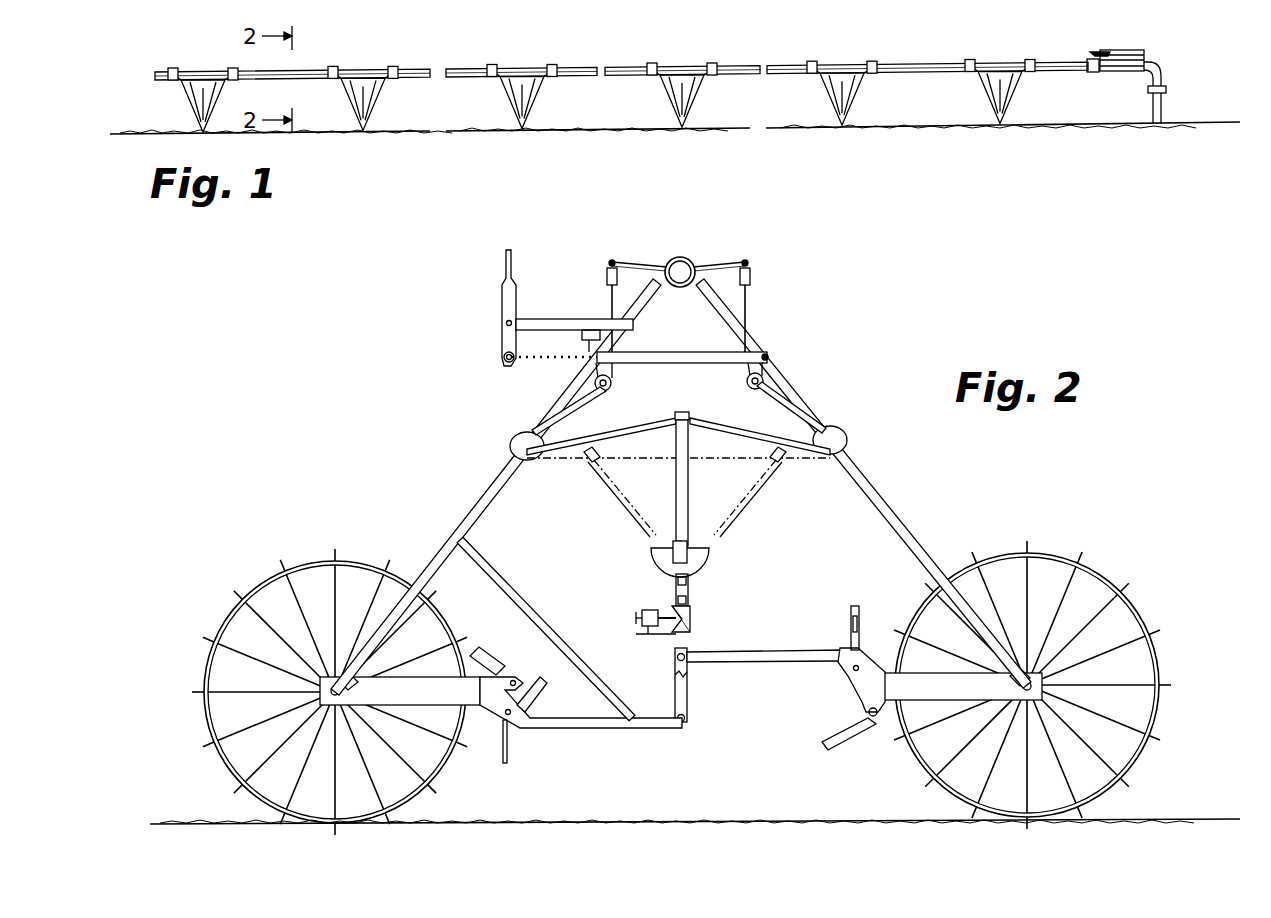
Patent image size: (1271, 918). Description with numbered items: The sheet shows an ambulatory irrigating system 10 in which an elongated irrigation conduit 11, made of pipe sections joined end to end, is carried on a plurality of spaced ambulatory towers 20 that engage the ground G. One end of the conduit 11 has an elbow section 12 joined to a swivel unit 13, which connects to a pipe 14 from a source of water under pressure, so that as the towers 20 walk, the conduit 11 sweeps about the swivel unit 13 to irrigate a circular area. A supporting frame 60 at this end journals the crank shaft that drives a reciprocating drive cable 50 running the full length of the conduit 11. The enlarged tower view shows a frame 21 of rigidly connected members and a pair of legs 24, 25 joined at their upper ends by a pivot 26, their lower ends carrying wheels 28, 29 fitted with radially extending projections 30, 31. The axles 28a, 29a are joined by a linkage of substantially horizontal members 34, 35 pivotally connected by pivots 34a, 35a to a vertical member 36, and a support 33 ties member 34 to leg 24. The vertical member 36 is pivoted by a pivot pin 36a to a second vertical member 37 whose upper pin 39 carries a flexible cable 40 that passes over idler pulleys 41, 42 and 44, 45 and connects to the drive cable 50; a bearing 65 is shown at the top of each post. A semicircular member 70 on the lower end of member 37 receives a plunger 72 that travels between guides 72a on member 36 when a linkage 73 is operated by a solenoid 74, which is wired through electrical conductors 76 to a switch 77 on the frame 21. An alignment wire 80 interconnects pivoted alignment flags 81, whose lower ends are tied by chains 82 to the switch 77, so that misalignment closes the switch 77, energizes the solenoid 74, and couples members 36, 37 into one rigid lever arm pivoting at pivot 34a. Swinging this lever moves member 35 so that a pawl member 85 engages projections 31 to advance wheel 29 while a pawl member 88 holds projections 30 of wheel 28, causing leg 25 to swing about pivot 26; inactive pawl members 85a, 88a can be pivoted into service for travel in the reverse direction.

In FIG. 1, the ambulatory irrigating system 10 is at (616, 50).
In FIG. 1, the elongated irrigation conduit 11 is at (745, 75).
In FIG. 2, the elongated irrigation conduit 11 is at (684, 258).
In FIG. 1, the elbow section 12 is at (1160, 78).
In FIG. 1, the swivel unit 13 is at (1164, 89).
In FIG. 1, the pipe 14 is at (1162, 115).
In FIG. 1, the ambulatory towers 20 is at (195, 98).
In FIG. 2, the ambulatory towers 20 is at (458, 424).
In FIG. 2, the frame 21 is at (688, 354).
In FIG. 2, the leg 24 is at (480, 500).
In FIG. 2, the leg 25 is at (870, 496).
In FIG. 2, the pivot 26 is at (767, 356).
In FIG. 2, the wheel 28 is at (272, 576).
In FIG. 2, the axle 28a is at (342, 686).
In FIG. 2, the wheel 29 is at (1108, 578).
In FIG. 2, the axle 29a is at (1050, 690).
In FIG. 2, the projections 30 is at (336, 562).
In FIG. 2, the projections 31 is at (1078, 560).
In FIG. 2, the support 33 is at (522, 556).
In FIG. 2, the horizontal member 34 is at (588, 732).
In FIG. 2, the pivot 34a is at (690, 721).
In FIG. 2, the horizontal member 35 is at (789, 665).
In FIG. 2, the pivot 35a is at (675, 657).
In FIG. 2, the vertical member 36 is at (702, 553).
In FIG. 2, the pivot pin 36a is at (660, 548).
In FIG. 2, the second vertical member 37 is at (687, 470).
In FIG. 2, the pin 39 is at (689, 425).
In FIG. 2, the flexible cable 40 is at (629, 440).
In FIG. 2, the idler pulley 41 is at (512, 447).
In FIG. 2, the idler pulley 42 is at (613, 384).
In FIG. 2, the idler pulley 44 is at (846, 442).
In FIG. 2, the idler pulley 45 is at (745, 383).
In FIG. 2, the reciprocating drive cable 50 is at (606, 272).
In FIG. 1, the supporting frame 60 is at (1135, 50).
In FIG. 2, the bearing 65 is at (612, 264).
In FIG. 2, the semicircular member 70 is at (712, 571).
In FIG. 2, the plunger 72 is at (689, 597).
In FIG. 2, the guides 72a is at (672, 580).
In FIG. 2, the linkage 73 is at (694, 626).
In FIG. 2, the solenoid 74 is at (658, 612).
In FIG. 2, the electrical conductors 76 is at (582, 334).
In FIG. 2, the switch 77 is at (590, 330).
In FIG. 2, the alignment wire 80 is at (502, 358).
In FIG. 2, the alignment flag 81 is at (505, 268).
In FIG. 2, the chain 82 is at (538, 364).
In FIG. 2, the pawl member 85 is at (862, 740).
In FIG. 2, the inactive pawl member 85a is at (858, 612).
In FIG. 2, the pawl member 88 is at (482, 648).
In FIG. 2, the inactive pawl member 88a is at (507, 756).
In FIG. 1, the ground G is at (622, 130).
In FIG. 2, the ground G is at (718, 820).